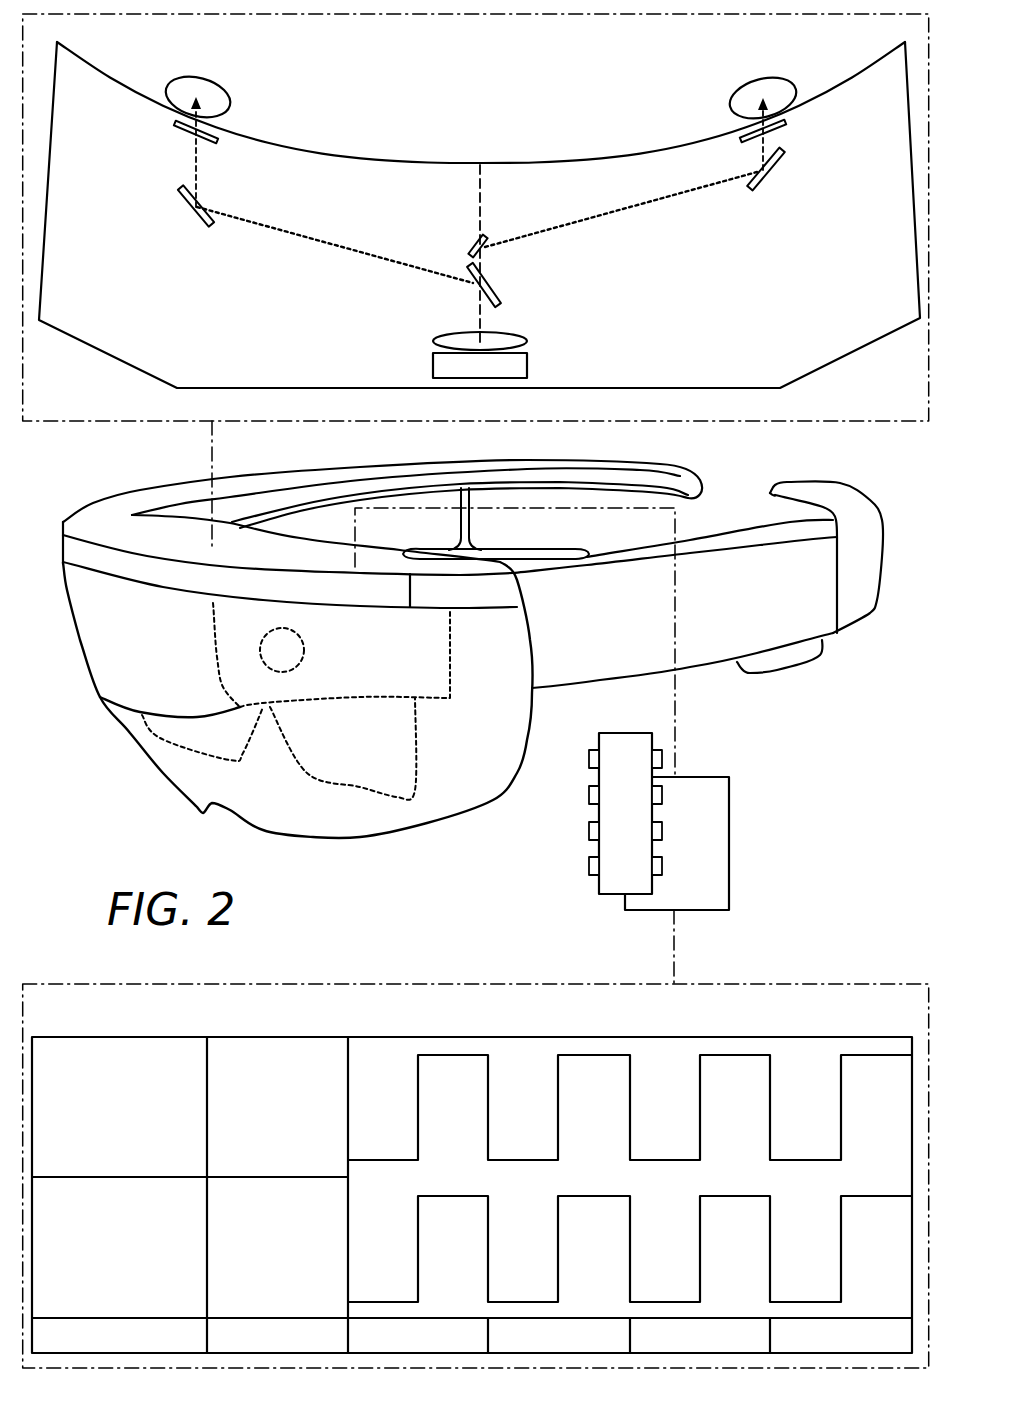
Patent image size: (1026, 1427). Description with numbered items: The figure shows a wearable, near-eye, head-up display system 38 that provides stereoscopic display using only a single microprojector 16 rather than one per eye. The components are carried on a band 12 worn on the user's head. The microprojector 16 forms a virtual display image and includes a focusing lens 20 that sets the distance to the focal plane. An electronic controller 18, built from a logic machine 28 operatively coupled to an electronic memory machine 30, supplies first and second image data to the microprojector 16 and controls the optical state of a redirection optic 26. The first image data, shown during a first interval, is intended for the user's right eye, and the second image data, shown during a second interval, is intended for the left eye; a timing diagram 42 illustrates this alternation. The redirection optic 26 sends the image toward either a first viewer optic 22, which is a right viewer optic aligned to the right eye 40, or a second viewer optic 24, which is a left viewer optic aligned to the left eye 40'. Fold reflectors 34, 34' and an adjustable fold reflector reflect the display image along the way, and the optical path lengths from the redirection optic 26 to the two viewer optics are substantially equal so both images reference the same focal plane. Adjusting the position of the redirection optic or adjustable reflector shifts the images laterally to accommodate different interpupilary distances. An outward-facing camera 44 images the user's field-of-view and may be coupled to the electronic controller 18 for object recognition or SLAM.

The band 12 is at (589, 625).
The microprojector 16 is at (469, 378).
The electronic controller 18 is at (673, 808).
The focusing lens 20 is at (433, 341).
The first viewer optic 22 is at (174, 125).
The second viewer optic 24 is at (789, 128).
The redirection optic 26 is at (500, 290).
The logic machine 28 is at (667, 855).
The electronic memory machine 30 is at (614, 825).
The fold reflector 34 is at (166, 205).
The fold reflector 34' is at (799, 169).
The head-up display system 38 is at (696, 294).
The right eye 40 is at (229, 138).
The left eye 40' is at (730, 120).
The timing diagram 42 is at (469, 1020).
The camera 44 is at (271, 662).